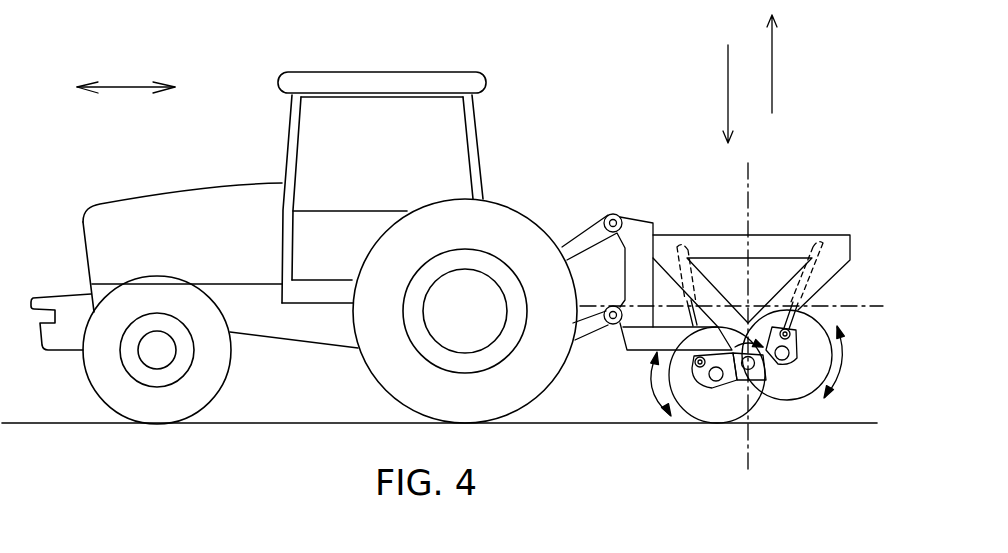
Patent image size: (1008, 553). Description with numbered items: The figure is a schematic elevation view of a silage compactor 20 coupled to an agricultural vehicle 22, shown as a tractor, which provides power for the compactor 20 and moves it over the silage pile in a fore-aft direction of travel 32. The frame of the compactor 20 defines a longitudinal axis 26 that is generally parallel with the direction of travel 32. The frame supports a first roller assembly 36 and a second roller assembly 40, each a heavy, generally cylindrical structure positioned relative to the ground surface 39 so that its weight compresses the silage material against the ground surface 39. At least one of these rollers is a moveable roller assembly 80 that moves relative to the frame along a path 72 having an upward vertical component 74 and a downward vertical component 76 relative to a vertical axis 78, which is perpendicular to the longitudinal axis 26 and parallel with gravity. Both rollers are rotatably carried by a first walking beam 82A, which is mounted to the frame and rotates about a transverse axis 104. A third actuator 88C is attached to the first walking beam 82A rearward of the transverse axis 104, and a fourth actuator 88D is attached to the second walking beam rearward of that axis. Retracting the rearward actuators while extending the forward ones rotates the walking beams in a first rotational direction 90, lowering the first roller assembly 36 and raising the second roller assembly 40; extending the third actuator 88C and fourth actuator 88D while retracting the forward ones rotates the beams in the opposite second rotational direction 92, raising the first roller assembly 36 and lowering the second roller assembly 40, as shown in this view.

The compactor 20 is at (778, 193).
The agricultural vehicle 22 is at (395, 72).
The longitudinal axis 26 is at (857, 305).
The fore-aft direction of travel 32 is at (132, 86).
The first roller assembly 36 is at (688, 400).
The ground surface 39 is at (858, 422).
The second roller assembly 40 is at (803, 380).
The path 72 is at (645, 378).
The upward vertical component 74 is at (772, 52).
The downward vertical component 76 is at (728, 100).
The vertical axis 78 is at (724, 346).
The moveable roller assembly 80 is at (743, 420).
The first walking beam 82A is at (777, 383).
The third actuator 88C is at (833, 240).
The fourth actuator 88D is at (676, 243).
The first rotational direction 90 is at (757, 378).
The second rotational direction 92 is at (736, 346).
The transverse axis 104 is at (738, 372).